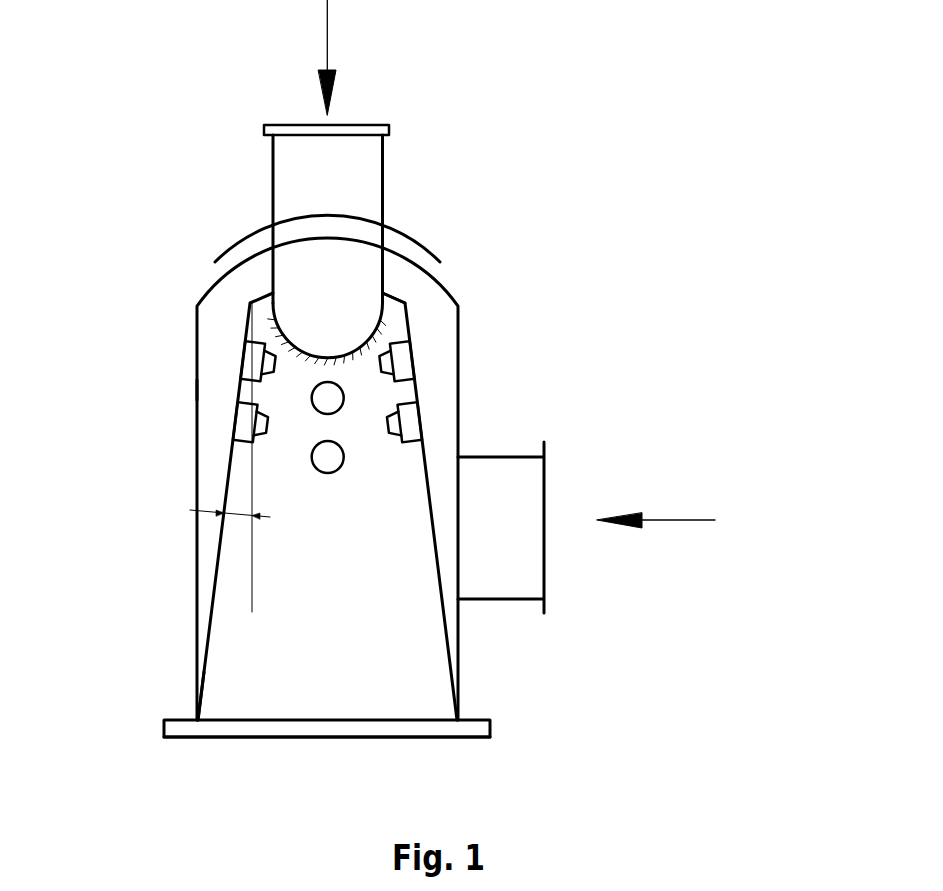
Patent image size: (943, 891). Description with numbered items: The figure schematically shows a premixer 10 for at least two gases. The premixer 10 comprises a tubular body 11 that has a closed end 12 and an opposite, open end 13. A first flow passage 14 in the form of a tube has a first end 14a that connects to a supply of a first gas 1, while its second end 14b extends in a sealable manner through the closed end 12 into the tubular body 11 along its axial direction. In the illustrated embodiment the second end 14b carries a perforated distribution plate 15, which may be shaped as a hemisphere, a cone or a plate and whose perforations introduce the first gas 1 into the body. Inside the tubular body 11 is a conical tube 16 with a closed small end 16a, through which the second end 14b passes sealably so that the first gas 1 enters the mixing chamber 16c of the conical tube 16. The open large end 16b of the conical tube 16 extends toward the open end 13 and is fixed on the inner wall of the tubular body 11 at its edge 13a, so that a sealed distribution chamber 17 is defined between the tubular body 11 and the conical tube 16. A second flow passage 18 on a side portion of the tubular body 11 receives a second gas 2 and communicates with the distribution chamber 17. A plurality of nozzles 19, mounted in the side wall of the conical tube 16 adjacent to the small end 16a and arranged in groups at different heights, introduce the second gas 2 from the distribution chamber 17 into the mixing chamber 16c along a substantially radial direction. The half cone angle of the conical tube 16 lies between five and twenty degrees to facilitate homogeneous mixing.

The first gas 1 is at (306, 57).
The second gas 2 is at (656, 540).
The premixer 10 is at (678, 158).
The tubular body 11 is at (197, 475).
The closed end 12 is at (225, 255).
The open end 13 is at (458, 685).
The edge 13a is at (468, 728).
The first flow passage 14 is at (355, 173).
The first end 14a is at (328, 133).
The second end 14b is at (273, 307).
The perforated distribution plate 15 is at (377, 330).
The conical tube 16 is at (430, 492).
The small end 16a is at (403, 302).
The large end 16b is at (195, 675).
The mixing chamber 16c is at (273, 630).
The distribution chamber 17 is at (210, 395).
The second flow passage 18 is at (544, 470).
The nozzles 19 is at (417, 408).